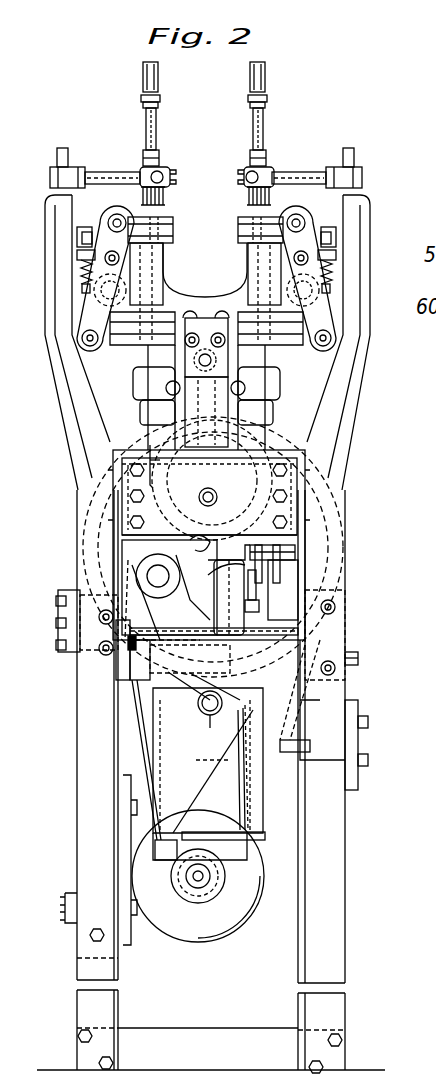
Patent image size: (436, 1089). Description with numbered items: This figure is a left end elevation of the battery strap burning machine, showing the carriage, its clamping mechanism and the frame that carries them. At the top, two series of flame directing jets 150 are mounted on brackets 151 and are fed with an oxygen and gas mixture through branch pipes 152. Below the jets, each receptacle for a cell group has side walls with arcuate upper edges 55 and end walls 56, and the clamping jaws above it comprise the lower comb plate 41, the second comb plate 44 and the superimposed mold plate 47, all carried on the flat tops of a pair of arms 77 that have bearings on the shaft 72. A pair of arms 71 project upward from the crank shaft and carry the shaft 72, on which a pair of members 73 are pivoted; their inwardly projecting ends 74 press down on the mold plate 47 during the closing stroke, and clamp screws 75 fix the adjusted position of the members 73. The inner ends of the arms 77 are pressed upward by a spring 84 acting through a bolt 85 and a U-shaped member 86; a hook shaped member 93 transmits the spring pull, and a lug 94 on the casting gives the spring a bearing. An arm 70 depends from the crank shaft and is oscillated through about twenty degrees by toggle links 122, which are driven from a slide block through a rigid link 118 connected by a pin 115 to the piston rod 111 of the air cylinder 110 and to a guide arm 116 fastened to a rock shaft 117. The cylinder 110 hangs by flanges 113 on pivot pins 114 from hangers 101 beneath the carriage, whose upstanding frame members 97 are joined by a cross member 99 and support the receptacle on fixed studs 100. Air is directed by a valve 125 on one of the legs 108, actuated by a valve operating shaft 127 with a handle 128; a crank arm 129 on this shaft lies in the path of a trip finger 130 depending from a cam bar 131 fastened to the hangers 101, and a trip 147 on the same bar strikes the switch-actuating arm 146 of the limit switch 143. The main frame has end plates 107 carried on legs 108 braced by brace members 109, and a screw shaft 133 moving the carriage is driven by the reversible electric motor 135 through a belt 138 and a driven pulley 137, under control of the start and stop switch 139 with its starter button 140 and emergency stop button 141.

The comb plate 41 is at (238, 240).
The second comb plate 44 is at (173, 226).
The mold plate 47 is at (240, 218).
The arcuate upper edges 55 is at (197, 294).
The end walls 56 is at (127, 290).
The arm 70 is at (92, 320).
The arms 71 is at (104, 226).
The shaft 72 is at (117, 222).
The members 73 is at (110, 210).
The inwardly projecting ends 74 is at (140, 178).
The clamp screws 75 is at (120, 262).
The arms 77 is at (240, 246).
The spring 84 is at (82, 278).
The bolt 85 is at (86, 290).
The U-shaped member 86 is at (84, 238).
The hook shaped member 93 is at (80, 228).
The lug 94 is at (80, 258).
The frame members 97 is at (145, 422).
The cross member 99 is at (280, 386).
The fixed studs 100 is at (205, 395).
The hangers 101 is at (190, 690).
The end plates 107 is at (150, 441).
The legs 108 is at (335, 908).
The brace members 109 is at (178, 1034).
The air cylinder 110 is at (245, 770).
The piston rod 111 is at (204, 604).
The flanges 113 is at (190, 786).
The pivot pins 114 is at (197, 715).
The pin 115 is at (264, 520).
The guide arm 116 is at (165, 548).
The rock shaft 117 is at (158, 576).
The rigid link 118 is at (240, 394).
The toggle links 122 is at (138, 348).
The valve 125 is at (68, 620).
The valve operating shaft 127 is at (168, 640).
The handle 128 is at (360, 658).
The crank arm 129 is at (310, 617).
The trip finger 130 is at (283, 580).
The cam bar 131 is at (300, 555).
The screw shaft 133 is at (216, 476).
The electric motor 135 is at (198, 930).
The driven pulley 137 is at (335, 468).
The belt 138 is at (140, 738).
The start and stop switch 139 is at (357, 782).
The starter button 140 is at (369, 759).
The emergency stop button 141 is at (369, 721).
The limit switch 143 is at (285, 708).
The switch-actuating arm 146 is at (250, 590).
The trip 147 is at (253, 588).
The flame directing jets 150 is at (165, 200).
The brackets 151 is at (70, 405).
The branch pipes 152 is at (253, 118).